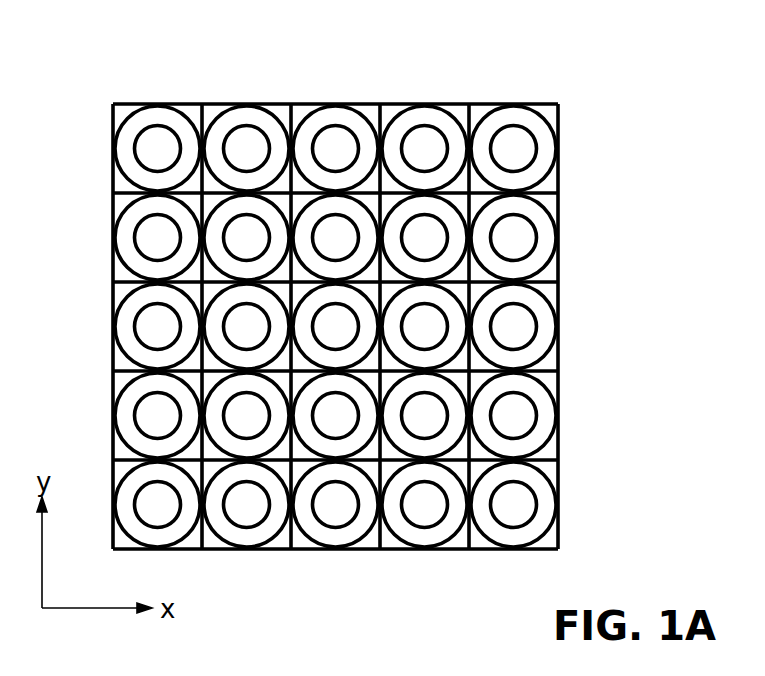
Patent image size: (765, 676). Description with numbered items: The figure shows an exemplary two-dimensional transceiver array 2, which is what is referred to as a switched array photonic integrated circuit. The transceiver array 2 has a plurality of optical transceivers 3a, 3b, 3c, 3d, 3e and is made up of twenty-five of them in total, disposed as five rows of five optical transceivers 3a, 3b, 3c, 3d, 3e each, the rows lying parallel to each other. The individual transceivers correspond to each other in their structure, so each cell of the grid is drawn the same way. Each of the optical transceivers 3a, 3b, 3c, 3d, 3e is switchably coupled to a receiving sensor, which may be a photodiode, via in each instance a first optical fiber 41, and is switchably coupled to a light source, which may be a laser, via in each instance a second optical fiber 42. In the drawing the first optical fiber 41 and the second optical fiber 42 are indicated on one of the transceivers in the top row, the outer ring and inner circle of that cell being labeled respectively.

The two-dimensional transceiver array 2 is at (150, 90).
The optical transceiver 3a is at (553, 113).
The optical transceiver 3b is at (553, 203).
The optical transceiver 3c is at (553, 293).
The optical transceiver 3d is at (553, 383).
The optical transceiver 3e is at (553, 473).
The first optical fiber 41 is at (410, 117).
The second optical fiber 42 is at (428, 138).